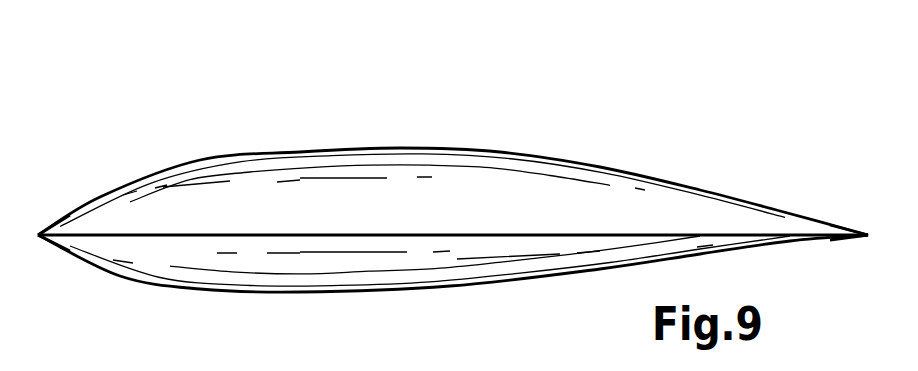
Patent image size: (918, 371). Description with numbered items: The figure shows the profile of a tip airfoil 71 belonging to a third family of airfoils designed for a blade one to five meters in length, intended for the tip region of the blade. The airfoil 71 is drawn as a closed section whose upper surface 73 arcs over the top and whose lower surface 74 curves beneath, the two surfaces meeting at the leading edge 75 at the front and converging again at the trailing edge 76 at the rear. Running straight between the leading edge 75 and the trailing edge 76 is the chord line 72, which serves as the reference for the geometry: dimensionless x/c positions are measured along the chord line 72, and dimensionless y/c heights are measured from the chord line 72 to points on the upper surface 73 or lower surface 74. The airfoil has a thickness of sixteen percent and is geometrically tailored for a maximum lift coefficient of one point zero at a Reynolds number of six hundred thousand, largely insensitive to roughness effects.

The tip airfoil 71 is at (633, 115).
The chord line 72 is at (352, 233).
The upper surface 73 is at (200, 160).
The lower surface 74 is at (153, 290).
The leading edge 75 is at (38, 230).
The trailing edge 76 is at (847, 230).